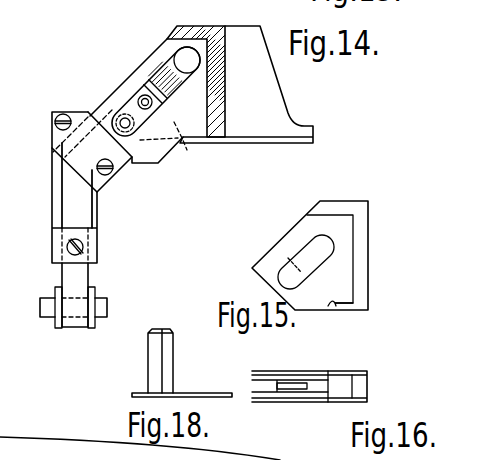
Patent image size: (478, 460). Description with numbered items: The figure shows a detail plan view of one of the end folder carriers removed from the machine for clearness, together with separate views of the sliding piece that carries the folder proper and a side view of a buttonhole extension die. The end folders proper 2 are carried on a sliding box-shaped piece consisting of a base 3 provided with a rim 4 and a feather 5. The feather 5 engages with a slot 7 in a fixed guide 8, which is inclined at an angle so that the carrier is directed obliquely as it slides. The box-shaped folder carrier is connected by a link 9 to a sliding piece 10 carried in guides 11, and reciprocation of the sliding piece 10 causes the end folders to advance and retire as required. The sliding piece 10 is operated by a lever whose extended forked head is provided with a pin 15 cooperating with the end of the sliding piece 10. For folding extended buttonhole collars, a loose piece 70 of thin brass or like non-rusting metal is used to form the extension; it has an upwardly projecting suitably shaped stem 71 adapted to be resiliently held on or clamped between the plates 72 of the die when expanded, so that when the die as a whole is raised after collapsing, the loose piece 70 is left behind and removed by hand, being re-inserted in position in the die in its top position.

In FIG. 14, the end folders proper 2 is at (272, 117).
In FIG. 14, the base 3 is at (181, 139).
In FIG. 15, the base 3 is at (336, 306).
In FIG. 16, the base 3 is at (279, 400).
In FIG. 14, the rim 4 is at (212, 76).
In FIG. 15, the rim 4 is at (358, 276).
In FIG. 16, the rim 4 is at (368, 391).
In FIG. 14, the feather 5 is at (165, 75).
In FIG. 15, the feather 5 is at (305, 258).
In FIG. 16, the feather 5 is at (313, 387).
In FIG. 14, the slot 7 is at (187, 57).
In FIG. 14, the fixed guide 8 is at (147, 160).
In FIG. 14, the link 9 is at (128, 115).
In FIG. 14, the sliding piece 10 is at (72, 188).
In FIG. 14, the guides 11 is at (58, 216).
In FIG. 14, the pin 15 is at (101, 307).
In FIG. 18, the loose piece 70 is at (200, 393).
In FIG. 18, the stem 71 is at (155, 368).
In FIG. 18, the plates 72 is at (316, 452).